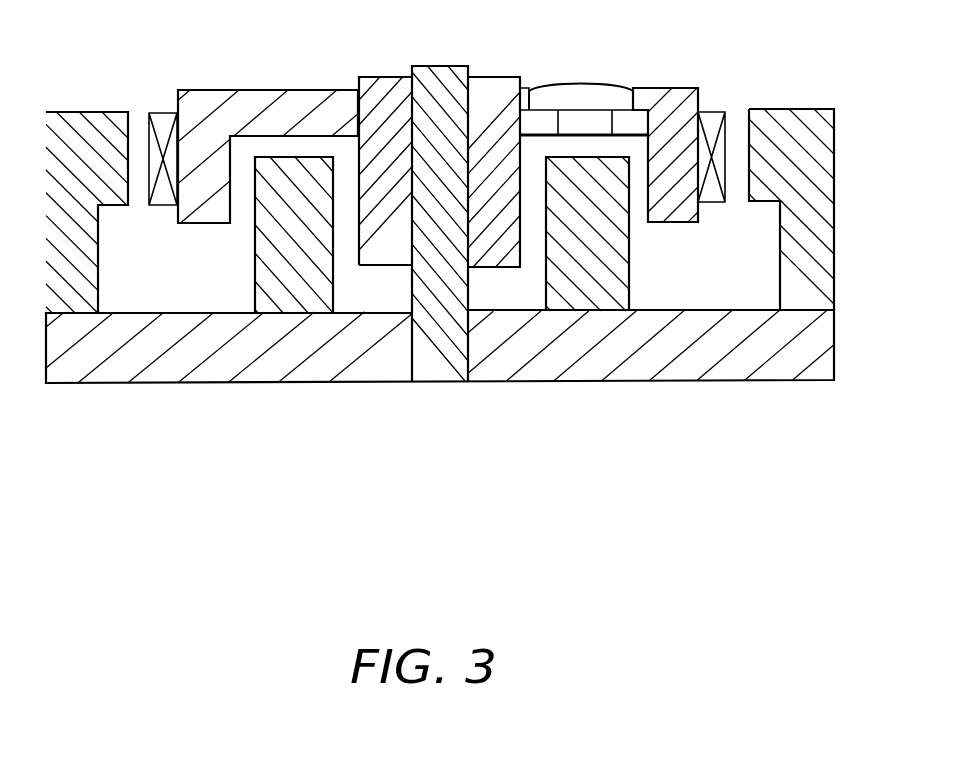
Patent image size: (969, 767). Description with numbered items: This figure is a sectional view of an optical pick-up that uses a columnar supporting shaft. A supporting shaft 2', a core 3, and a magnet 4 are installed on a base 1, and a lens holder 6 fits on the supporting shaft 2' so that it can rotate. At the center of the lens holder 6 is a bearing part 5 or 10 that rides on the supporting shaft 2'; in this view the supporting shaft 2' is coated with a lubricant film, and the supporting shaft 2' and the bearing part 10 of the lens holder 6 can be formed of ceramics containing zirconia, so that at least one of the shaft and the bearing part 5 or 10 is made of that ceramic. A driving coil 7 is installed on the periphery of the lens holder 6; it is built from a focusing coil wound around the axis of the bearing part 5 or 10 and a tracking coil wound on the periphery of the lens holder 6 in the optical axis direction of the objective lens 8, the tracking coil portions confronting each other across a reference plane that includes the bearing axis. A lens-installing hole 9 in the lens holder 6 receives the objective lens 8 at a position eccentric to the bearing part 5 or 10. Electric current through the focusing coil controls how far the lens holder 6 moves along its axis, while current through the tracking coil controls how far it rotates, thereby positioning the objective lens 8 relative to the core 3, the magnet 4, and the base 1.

The base 1 is at (107, 367).
The supporting shaft 2' is at (447, 254).
The core 3 is at (301, 297).
The magnet 4 is at (823, 213).
The bearing part 5 is at (417, 187).
The lens holder 6 is at (297, 108).
The driving coil 7 is at (716, 110).
The objective lens 8 is at (563, 78).
The lens-installing hole 9 is at (628, 84).
The bearing part 10 is at (503, 87).